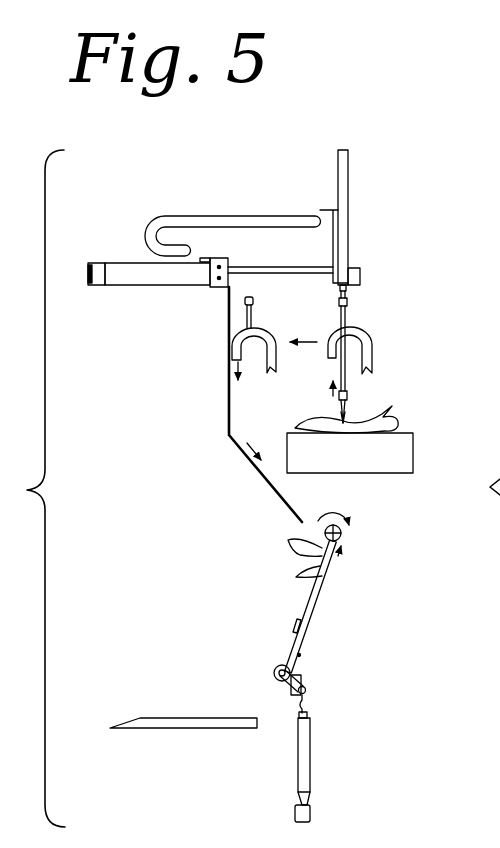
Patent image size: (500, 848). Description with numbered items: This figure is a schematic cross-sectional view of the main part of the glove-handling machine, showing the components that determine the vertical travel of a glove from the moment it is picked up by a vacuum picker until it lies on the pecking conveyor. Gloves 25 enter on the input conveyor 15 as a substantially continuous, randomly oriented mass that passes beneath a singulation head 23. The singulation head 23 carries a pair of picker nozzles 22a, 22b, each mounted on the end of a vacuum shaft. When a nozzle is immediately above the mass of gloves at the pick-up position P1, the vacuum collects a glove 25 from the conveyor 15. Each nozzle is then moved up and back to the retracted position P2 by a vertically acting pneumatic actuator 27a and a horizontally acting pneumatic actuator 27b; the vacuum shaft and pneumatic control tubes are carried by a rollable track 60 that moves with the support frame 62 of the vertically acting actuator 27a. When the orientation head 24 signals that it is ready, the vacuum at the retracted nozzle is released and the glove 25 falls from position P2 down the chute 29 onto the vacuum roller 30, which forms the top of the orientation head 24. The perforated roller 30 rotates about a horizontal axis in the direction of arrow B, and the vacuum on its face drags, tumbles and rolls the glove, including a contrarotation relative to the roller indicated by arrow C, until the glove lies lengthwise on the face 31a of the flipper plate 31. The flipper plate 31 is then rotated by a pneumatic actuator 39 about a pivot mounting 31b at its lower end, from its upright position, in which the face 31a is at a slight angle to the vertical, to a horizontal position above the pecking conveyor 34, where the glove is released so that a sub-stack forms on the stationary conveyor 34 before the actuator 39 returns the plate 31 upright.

The input conveyor 15 is at (350, 463).
The picker nozzle 22a is at (336, 416).
The picker nozzle 22b is at (346, 316).
The singulation head 23 is at (414, 198).
The orientation head 24 is at (200, 604).
The glove 25 is at (367, 334).
The vertically acting pneumatic actuator 27a is at (353, 166).
The horizontally acting pneumatic actuator 27b is at (176, 292).
The chute 29 is at (262, 480).
The vacuum roller 30 is at (342, 548).
The flipper plate 31 is at (308, 637).
The face of flipper plate 31a is at (290, 632).
The pivot mounting 31b is at (300, 672).
The pecking conveyor 34 is at (205, 725).
The pneumatic actuator 39 is at (312, 762).
The rollable track 60 is at (222, 215).
The support frame 62 is at (320, 210).
The pick-up position P1 is at (360, 398).
The retracted position P2 is at (232, 314).
The direction of rotation of orientation roller B is at (329, 518).
The direction of glove contrarotation C is at (293, 570).